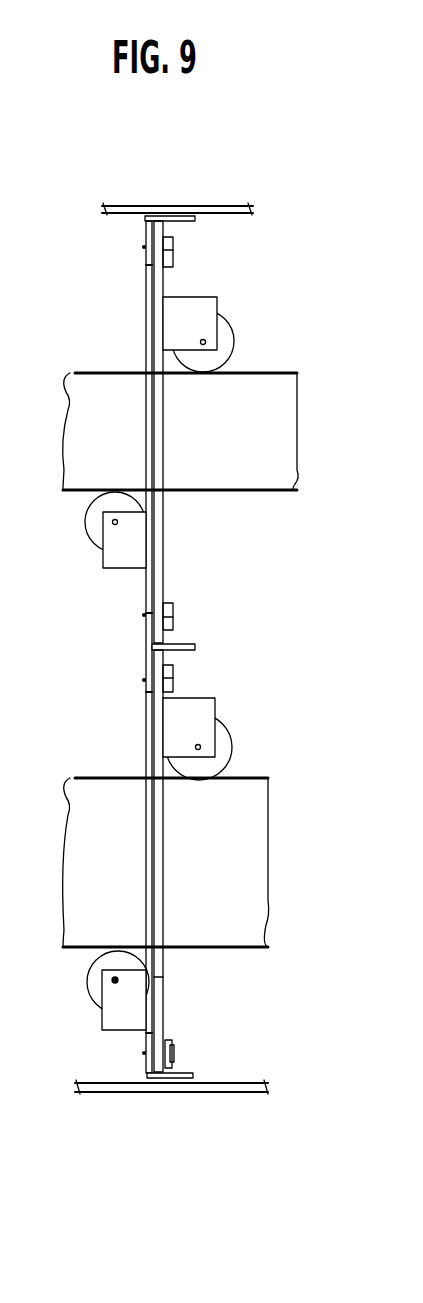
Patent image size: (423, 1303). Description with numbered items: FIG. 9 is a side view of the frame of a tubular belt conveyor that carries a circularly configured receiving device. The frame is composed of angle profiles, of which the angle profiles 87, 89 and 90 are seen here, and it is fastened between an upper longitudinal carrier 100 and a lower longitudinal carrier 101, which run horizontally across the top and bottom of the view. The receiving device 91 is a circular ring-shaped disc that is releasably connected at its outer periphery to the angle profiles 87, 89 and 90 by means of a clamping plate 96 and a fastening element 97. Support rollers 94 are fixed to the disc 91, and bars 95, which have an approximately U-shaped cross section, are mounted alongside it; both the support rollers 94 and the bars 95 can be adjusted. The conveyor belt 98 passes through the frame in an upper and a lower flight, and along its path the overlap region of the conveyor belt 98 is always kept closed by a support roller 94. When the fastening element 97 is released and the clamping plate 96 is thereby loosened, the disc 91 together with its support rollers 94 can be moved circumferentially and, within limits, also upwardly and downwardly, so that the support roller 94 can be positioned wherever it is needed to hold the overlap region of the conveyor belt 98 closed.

The longitudinal carrier 100 is at (131, 206).
The angle profile 87 is at (145, 220).
The angle profile 90 is at (147, 634).
The receiving device 91 is at (158, 285).
The bar 95 is at (202, 315).
The conveyor belt 98 is at (95, 438).
The support roller 94 is at (92, 517).
The clamping plate 96 is at (167, 1040).
The fastening element 97 is at (174, 1050).
The angle profile 89 is at (145, 1063).
The longitudinal carrier 101 is at (107, 1093).